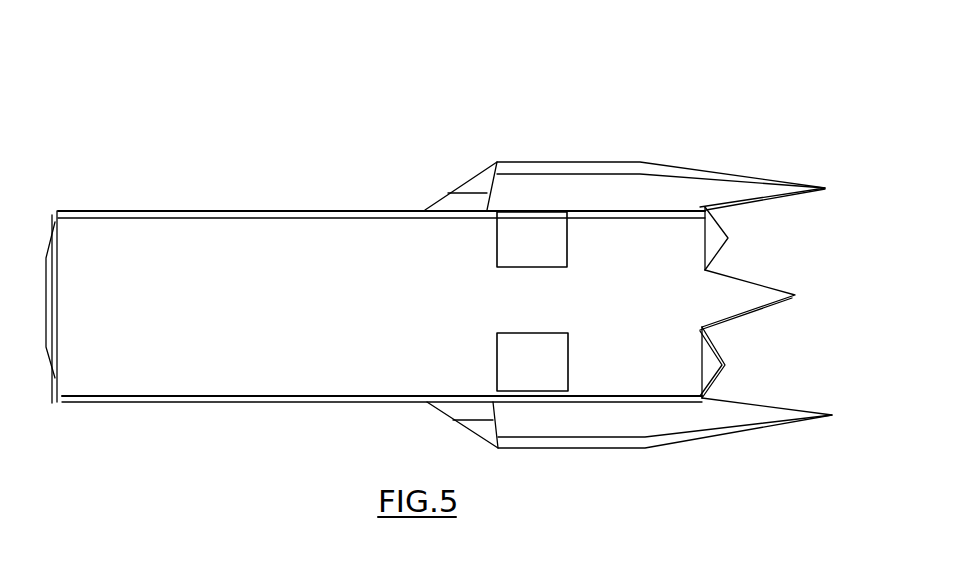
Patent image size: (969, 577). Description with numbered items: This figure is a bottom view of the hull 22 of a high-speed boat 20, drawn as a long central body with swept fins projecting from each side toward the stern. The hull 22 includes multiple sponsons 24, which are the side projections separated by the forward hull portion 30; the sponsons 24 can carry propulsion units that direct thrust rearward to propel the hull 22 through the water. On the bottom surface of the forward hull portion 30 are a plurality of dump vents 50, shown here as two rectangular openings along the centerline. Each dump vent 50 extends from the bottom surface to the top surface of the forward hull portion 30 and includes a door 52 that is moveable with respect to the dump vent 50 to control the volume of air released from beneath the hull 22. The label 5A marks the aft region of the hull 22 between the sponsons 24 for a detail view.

The high-speed boat 20 is at (283, 75).
The hull 22 is at (258, 243).
The sponsons 24 is at (707, 183).
The forward hull portion 30 is at (637, 220).
The dump vent 50 is at (507, 223).
The door 52 is at (558, 268).
The detail region of FIG. 5A is at (682, 290).